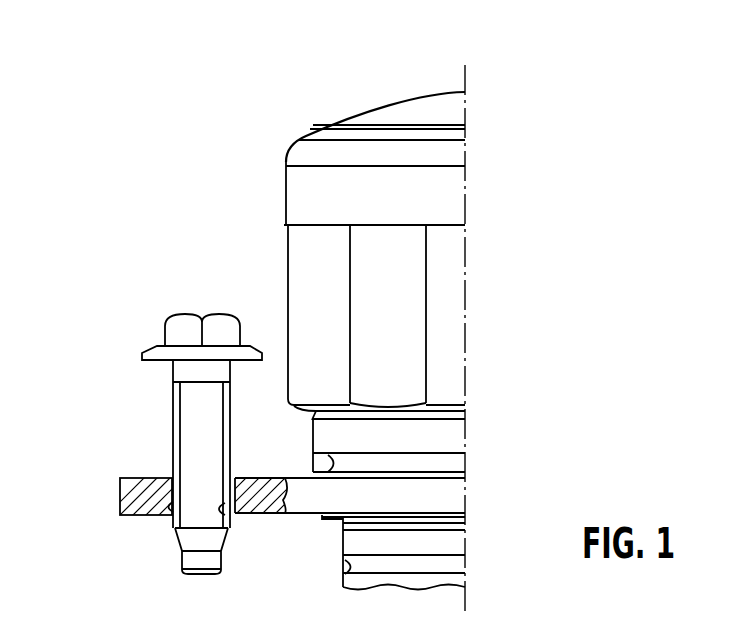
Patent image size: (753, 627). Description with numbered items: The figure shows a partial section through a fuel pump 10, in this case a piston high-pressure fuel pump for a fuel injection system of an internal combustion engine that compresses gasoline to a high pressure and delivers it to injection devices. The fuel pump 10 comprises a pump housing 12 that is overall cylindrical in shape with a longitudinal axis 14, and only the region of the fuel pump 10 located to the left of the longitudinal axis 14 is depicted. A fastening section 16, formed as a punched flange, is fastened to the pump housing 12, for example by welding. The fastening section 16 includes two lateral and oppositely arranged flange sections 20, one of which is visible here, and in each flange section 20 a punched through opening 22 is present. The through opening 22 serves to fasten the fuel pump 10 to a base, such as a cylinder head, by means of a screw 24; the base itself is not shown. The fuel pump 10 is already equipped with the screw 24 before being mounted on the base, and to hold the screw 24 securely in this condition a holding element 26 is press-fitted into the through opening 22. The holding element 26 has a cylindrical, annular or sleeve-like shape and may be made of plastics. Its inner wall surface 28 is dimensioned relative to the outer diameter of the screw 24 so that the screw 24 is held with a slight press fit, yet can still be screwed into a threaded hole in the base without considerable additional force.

The fuel pump 10 is at (243, 96).
The pump housing 12 is at (300, 193).
The longitudinal axis 14 is at (465, 305).
The fastening section 16 is at (300, 515).
The flange section 20 is at (135, 498).
The through opening 22 is at (183, 490).
The screw 24 is at (178, 333).
The holding element 26 is at (172, 520).
The inner wall surface 28 is at (231, 520).